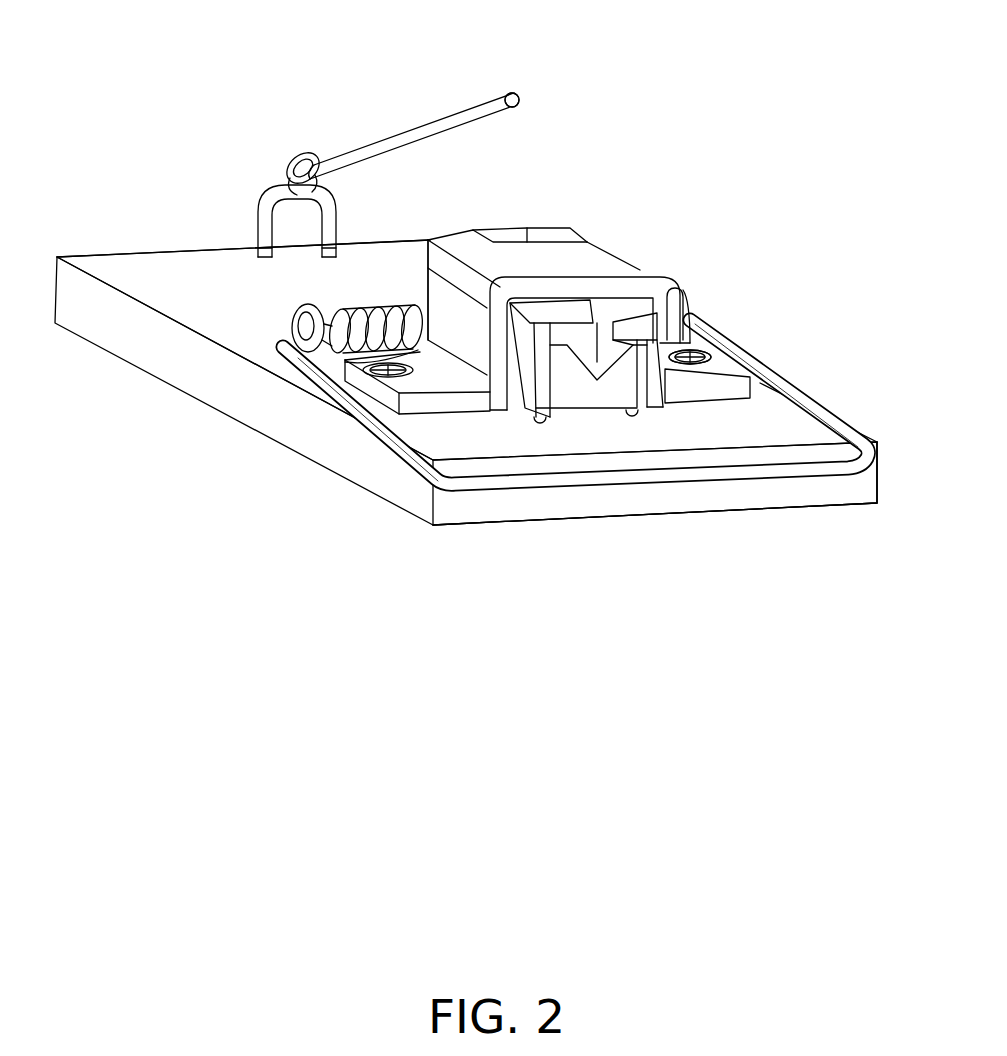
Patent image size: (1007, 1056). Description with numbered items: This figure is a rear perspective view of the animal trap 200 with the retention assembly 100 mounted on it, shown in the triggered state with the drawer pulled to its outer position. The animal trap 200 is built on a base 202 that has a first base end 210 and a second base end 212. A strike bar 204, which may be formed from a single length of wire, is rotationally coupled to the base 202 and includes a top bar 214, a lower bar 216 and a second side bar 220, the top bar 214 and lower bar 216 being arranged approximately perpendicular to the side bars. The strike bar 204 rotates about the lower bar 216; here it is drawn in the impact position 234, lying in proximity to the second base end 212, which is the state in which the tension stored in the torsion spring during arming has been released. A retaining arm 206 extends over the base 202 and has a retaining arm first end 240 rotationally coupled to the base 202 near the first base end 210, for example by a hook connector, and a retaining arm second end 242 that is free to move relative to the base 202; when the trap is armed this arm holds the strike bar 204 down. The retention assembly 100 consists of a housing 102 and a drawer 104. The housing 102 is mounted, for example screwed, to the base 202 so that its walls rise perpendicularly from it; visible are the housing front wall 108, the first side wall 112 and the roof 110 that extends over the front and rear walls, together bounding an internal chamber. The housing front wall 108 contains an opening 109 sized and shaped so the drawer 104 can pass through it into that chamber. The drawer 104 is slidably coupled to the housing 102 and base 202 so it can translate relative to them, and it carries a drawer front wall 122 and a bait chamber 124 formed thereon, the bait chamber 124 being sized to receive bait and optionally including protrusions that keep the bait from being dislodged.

The retention assembly 100 is at (629, 236).
The housing 102 is at (398, 418).
The drawer 104 is at (690, 358).
The housing front wall 108 is at (618, 279).
The opening 109 is at (508, 375).
The roof 110 is at (553, 248).
The first side wall 112 is at (470, 332).
The drawer front wall 122 is at (617, 373).
The bait chamber 124 is at (597, 362).
The animal trap 200 is at (898, 488).
The base 202 is at (140, 284).
The strike bar 204 is at (553, 485).
The retaining arm 206 is at (418, 122).
The first base end 210 is at (92, 254).
The second base end 212 is at (745, 450).
The top bar 214 is at (658, 488).
The lower bar 216 is at (340, 363).
The second side bar 220 is at (400, 445).
The impact position 234 is at (841, 406).
The retaining arm first end 240 is at (280, 162).
The retaining arm second end 242 is at (509, 92).